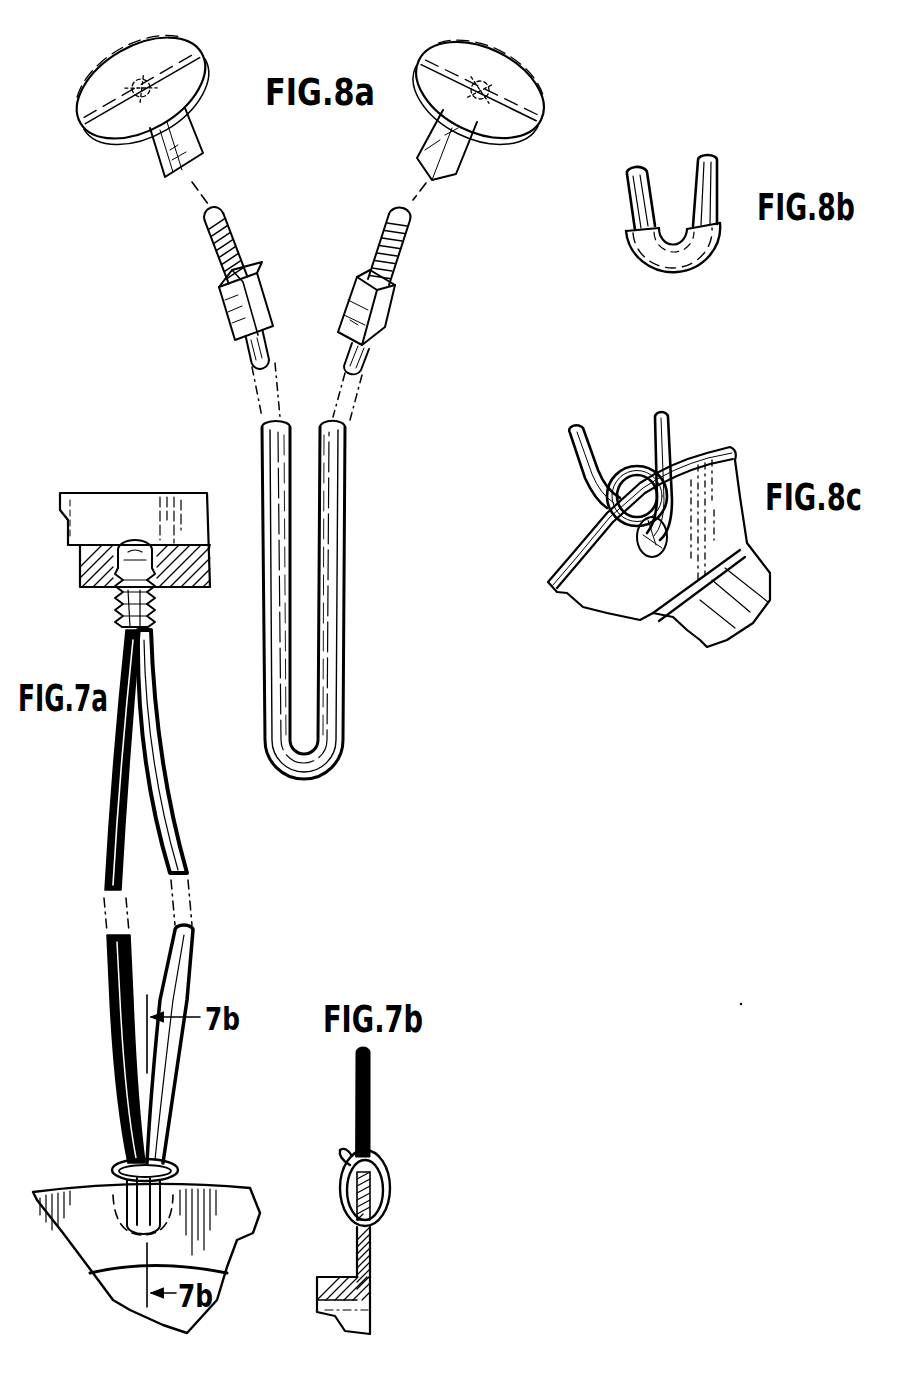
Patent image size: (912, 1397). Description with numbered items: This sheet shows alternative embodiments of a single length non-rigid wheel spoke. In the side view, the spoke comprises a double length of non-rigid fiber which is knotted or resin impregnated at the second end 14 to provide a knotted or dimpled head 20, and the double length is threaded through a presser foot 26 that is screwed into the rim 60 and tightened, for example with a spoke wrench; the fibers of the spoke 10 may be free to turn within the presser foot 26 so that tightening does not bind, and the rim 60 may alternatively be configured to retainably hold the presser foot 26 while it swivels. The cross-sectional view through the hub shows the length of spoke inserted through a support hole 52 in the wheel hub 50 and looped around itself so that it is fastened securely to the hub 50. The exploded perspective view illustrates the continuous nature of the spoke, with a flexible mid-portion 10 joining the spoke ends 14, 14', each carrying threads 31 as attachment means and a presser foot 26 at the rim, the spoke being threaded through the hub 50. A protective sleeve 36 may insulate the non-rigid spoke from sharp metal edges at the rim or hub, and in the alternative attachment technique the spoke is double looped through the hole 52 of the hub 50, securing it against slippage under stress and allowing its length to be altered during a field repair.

In FIG. 8A, the flexible mid-portion 10 is at (344, 543).
In FIG. 7A, the flexible mid-portion 10 is at (187, 857).
In FIG. 8A, the second end 14 is at (259, 326).
In FIG. 7A, the second end 14 is at (117, 740).
In FIG. 8A, the second end 14' is at (395, 342).
In FIG. 7A, the knotted or dimpled head 20 is at (135, 547).
In FIG. 8A, the presser foot 26 is at (115, 62).
In FIG. 7A, the presser foot 26 is at (160, 617).
In FIG. 8A, the threads 31 is at (212, 243).
In FIG. 8B, the protective sleeve 36 is at (700, 265).
In FIG. 8C, the wheel hub 50 is at (710, 637).
In FIG. 7A, the wheel hub 50 is at (234, 1237).
In FIG. 7B, the wheel hub 50 is at (371, 1312).
In FIG. 8C, the support hole 52 is at (650, 555).
In FIG. 7A, the support hole 52 is at (140, 1227).
In FIG. 7B, the support hole 52 is at (357, 1226).
In FIG. 7A, the rim 60 is at (77, 570).